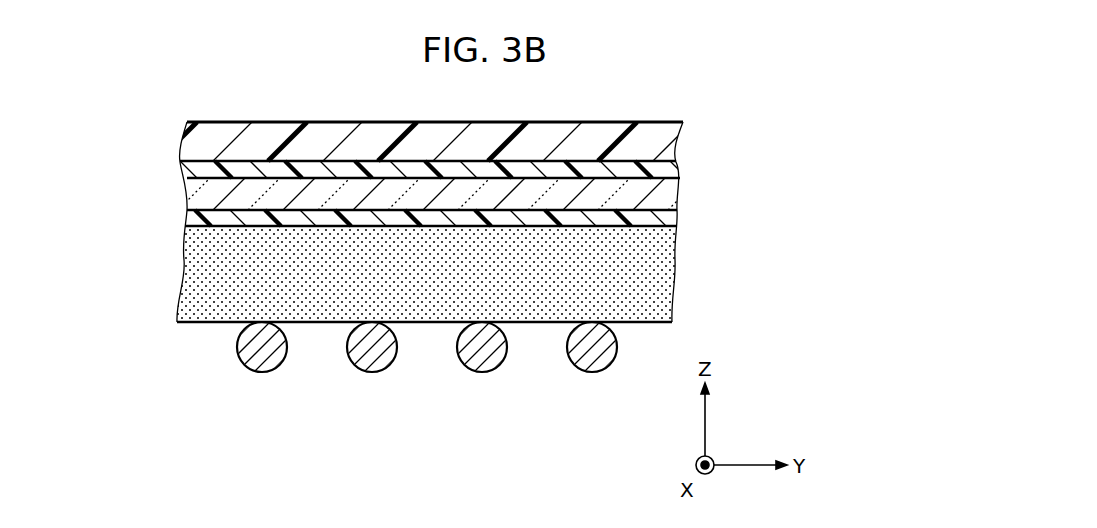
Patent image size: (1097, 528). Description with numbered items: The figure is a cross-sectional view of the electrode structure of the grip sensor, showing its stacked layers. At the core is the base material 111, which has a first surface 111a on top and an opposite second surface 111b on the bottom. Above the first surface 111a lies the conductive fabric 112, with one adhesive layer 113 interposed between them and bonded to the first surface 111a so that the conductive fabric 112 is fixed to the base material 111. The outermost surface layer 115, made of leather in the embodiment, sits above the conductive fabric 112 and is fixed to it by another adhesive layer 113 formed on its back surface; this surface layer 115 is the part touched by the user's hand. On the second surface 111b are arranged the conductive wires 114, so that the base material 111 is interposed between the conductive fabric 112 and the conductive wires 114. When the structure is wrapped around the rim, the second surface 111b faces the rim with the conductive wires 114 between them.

The base material 111 is at (662, 278).
The first surface 111a is at (222, 227).
The second surface 111b is at (200, 325).
The conductive fabric 112 is at (675, 196).
The adhesive layer 113 is at (662, 168).
The conductive wire 114 is at (262, 356).
The surface layer 115 is at (668, 140).